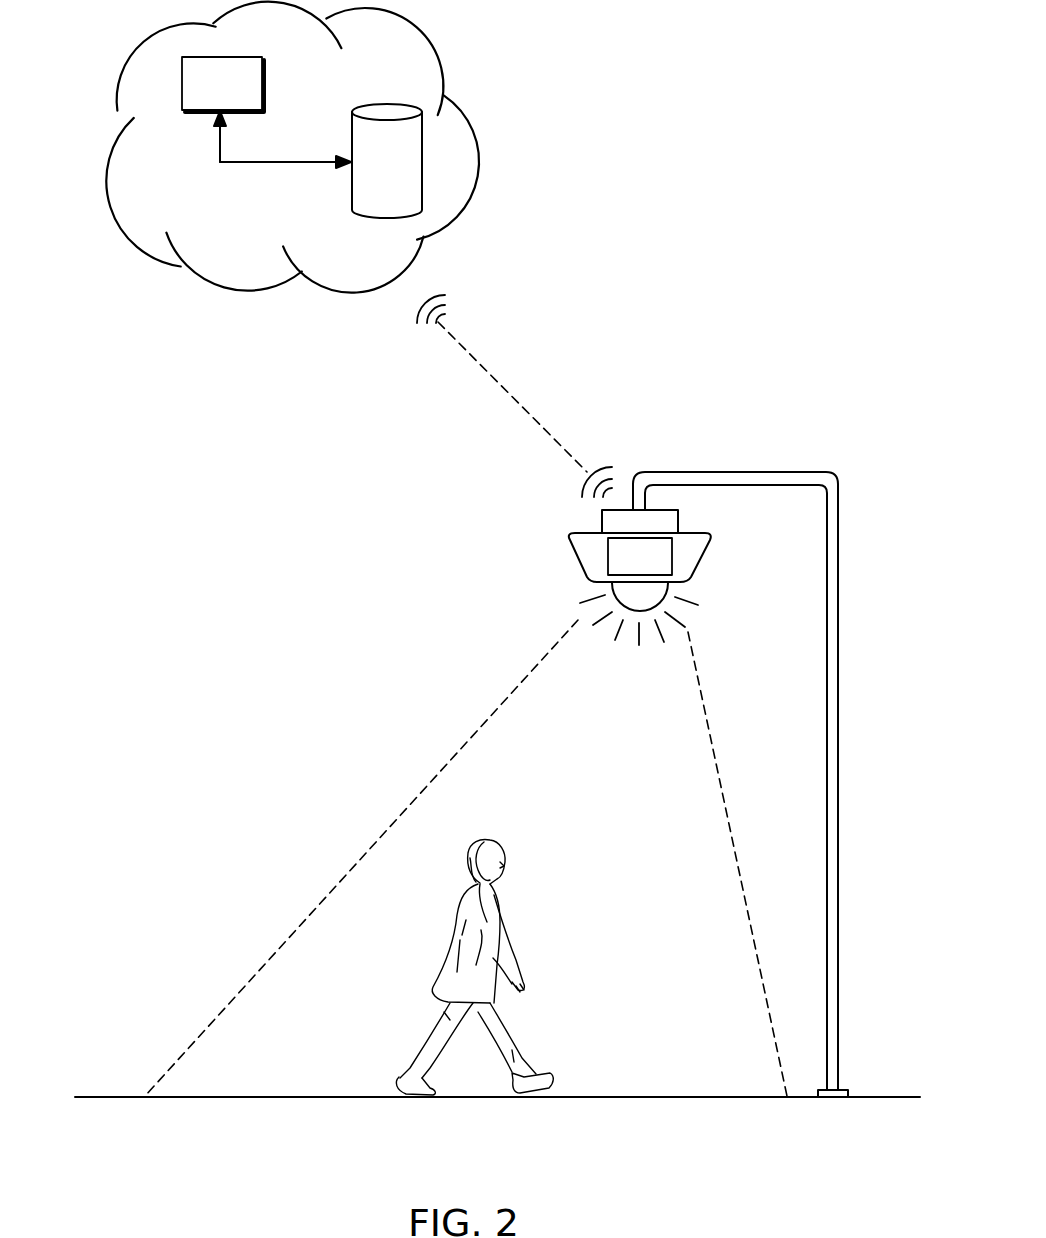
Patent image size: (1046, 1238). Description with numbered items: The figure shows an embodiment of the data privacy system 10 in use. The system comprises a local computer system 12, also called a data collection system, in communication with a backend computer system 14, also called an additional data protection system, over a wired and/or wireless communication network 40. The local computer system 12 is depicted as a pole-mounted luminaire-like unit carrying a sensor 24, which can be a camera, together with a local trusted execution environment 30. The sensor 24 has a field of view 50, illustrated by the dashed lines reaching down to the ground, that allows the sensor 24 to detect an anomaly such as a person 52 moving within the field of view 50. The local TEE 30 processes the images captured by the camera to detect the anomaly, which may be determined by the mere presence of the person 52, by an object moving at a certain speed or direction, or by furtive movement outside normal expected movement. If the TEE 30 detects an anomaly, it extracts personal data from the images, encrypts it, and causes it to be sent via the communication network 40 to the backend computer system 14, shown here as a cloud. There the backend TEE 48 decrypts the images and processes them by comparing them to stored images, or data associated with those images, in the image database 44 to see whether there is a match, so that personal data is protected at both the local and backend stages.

The data privacy system 10 is at (629, 35).
The local computer system 12 is at (731, 569).
The backend computer system 14 is at (143, 44).
The sensor 24 is at (610, 590).
The trusted execution environment 30 is at (607, 560).
The communication network 40 is at (527, 408).
The image database 44 is at (404, 177).
The backend TEE 48 is at (263, 83).
The field of view 50 is at (460, 750).
The person 52 is at (498, 912).